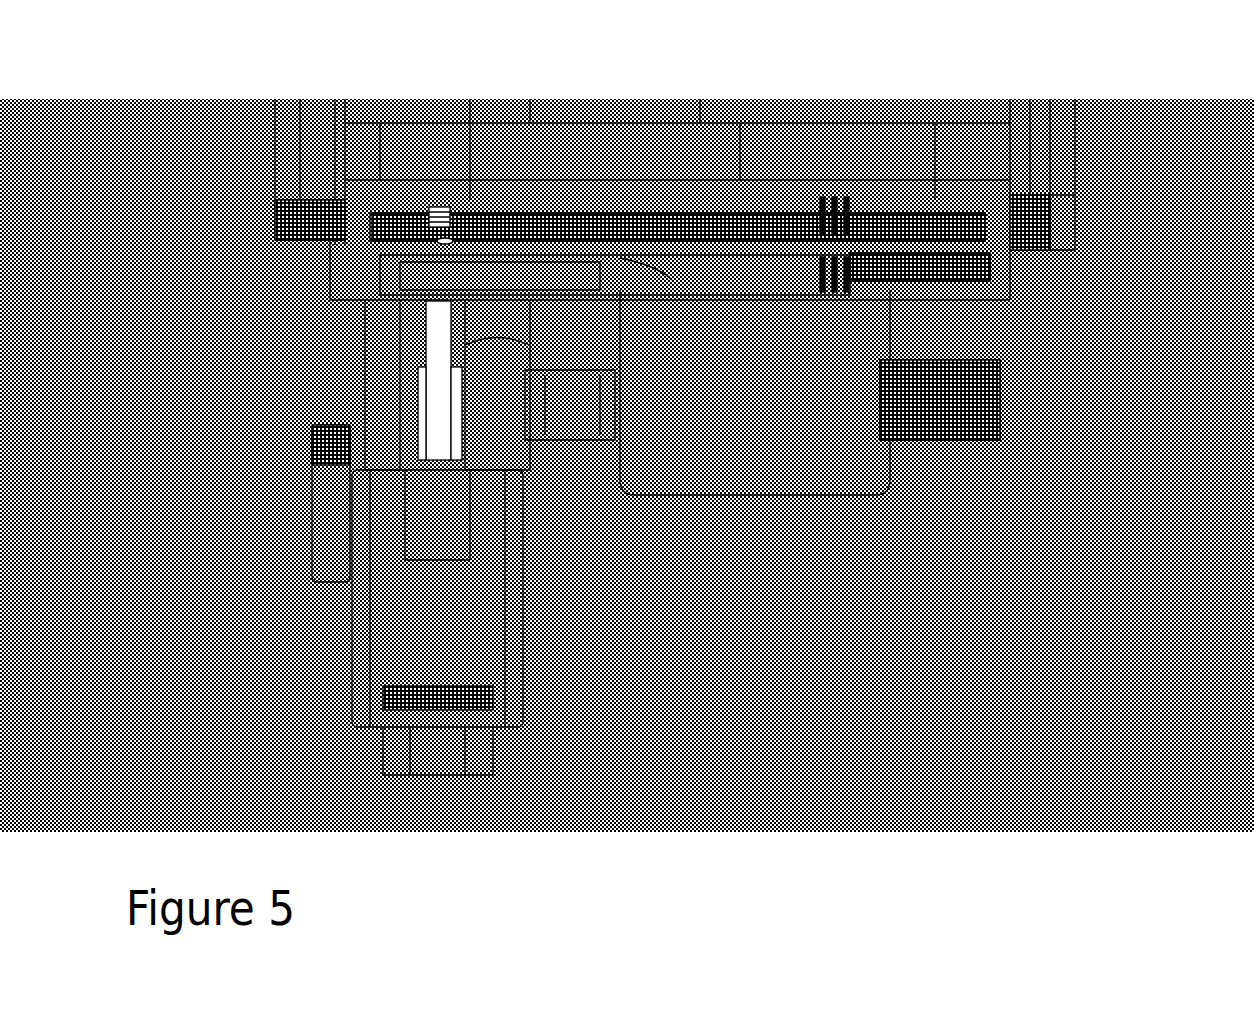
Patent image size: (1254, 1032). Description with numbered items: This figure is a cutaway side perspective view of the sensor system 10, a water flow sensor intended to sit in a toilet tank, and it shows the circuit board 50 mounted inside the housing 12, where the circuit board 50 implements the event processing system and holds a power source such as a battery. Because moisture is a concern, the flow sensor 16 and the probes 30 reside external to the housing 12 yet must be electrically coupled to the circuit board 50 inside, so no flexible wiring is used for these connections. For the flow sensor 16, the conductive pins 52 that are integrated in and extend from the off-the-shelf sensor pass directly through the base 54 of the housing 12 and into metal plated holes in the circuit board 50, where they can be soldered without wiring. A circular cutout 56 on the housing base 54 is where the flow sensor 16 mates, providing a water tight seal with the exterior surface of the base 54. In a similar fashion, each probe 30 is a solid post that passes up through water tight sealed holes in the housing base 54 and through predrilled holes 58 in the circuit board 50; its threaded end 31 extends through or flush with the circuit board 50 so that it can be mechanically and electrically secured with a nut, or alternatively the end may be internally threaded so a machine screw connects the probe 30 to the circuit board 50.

The sensor system 10 is at (32, 91).
The housing 12 is at (1080, 212).
The flow sensor 16 is at (739, 416).
The probe 30 is at (443, 428).
The threaded end 31 is at (433, 206).
The circuit board 50 is at (950, 250).
The conductive pins 52 is at (797, 198).
The base 54 is at (945, 295).
The circular cutout 56 is at (672, 283).
The predrilled holes 58 is at (446, 238).